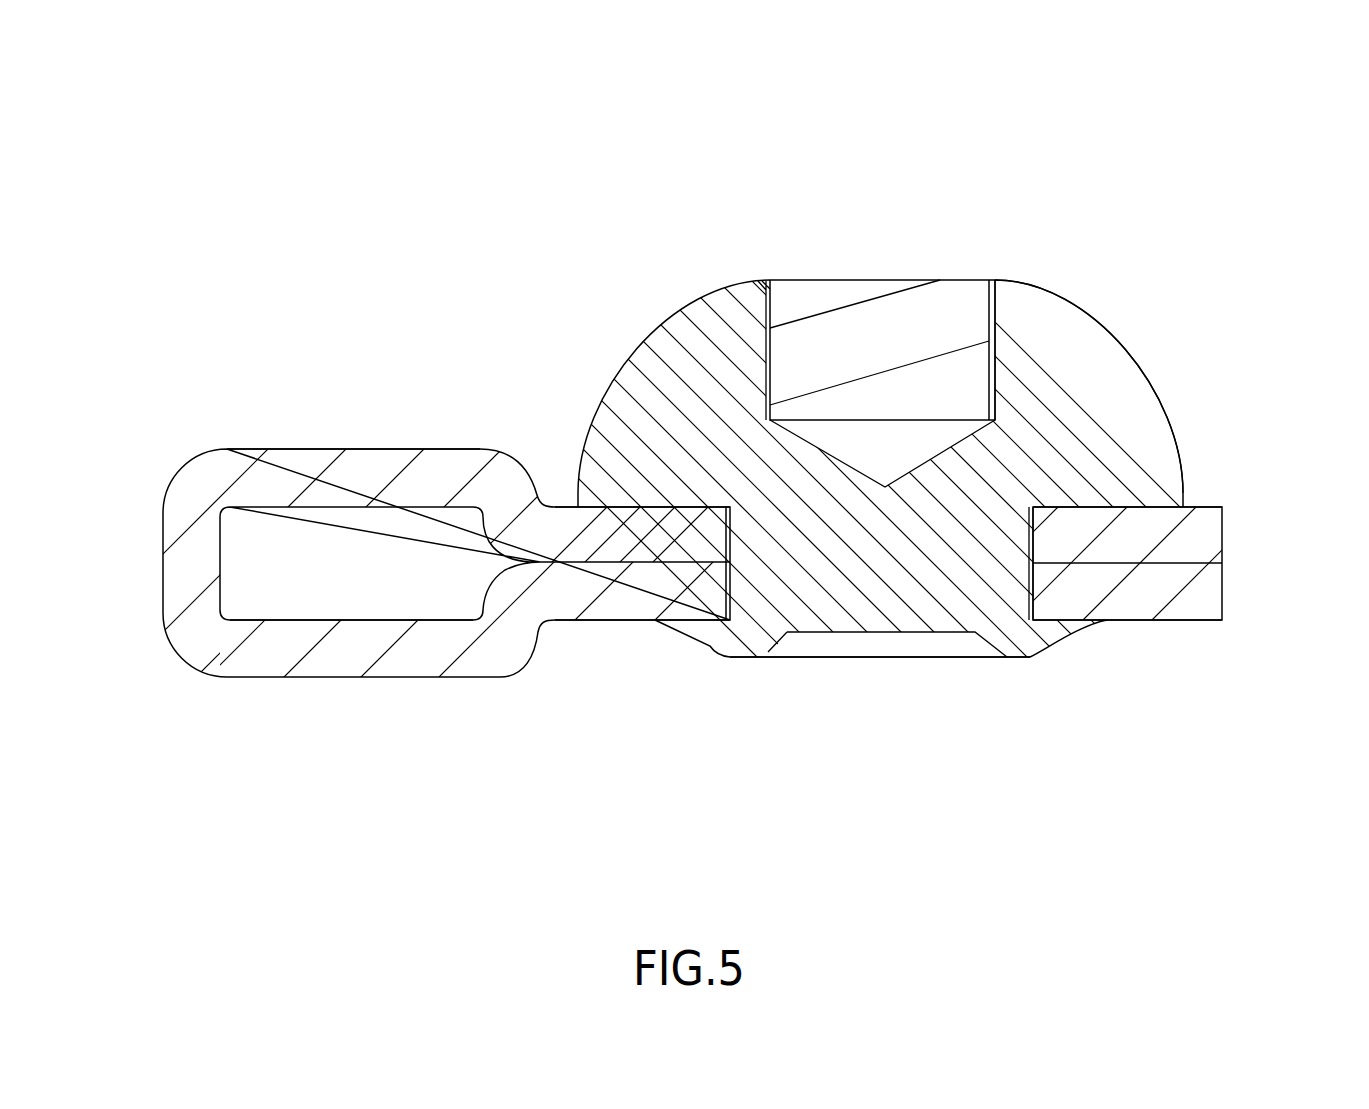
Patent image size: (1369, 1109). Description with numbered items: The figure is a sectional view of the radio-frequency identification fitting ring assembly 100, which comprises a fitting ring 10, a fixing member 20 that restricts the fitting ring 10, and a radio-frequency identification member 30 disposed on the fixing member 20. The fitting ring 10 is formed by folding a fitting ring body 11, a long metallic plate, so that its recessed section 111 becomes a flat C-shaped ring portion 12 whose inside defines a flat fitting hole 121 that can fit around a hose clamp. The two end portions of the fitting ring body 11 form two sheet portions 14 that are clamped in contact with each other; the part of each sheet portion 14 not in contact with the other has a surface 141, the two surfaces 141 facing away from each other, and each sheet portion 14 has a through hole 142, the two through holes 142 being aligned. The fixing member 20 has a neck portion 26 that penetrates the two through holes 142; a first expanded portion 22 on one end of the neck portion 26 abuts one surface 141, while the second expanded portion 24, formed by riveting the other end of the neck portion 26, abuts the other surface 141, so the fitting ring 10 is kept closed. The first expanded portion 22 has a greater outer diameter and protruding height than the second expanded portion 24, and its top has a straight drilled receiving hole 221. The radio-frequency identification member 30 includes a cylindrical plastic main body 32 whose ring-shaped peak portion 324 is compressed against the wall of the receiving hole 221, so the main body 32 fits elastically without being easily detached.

The radio-frequency identification fitting ring assembly 100 is at (240, 165).
The fitting ring 10 is at (412, 368).
The fitting ring body 11 is at (300, 445).
The ring portion 12 is at (163, 578).
The recessed section 111 is at (267, 620).
The fitting hole 121 is at (373, 590).
The fixing member 20 is at (630, 347).
The first expanded portion 22 is at (1120, 362).
The receiving hole 221 is at (975, 303).
The second expanded portion 24 is at (718, 635).
The neck portion 26 is at (905, 583).
The radio-frequency identification member 30 is at (818, 243).
The main body 32 is at (903, 272).
The peak portion 324 is at (768, 342).
The sheet portion 14 is at (1200, 590).
The surface 141 is at (1205, 507).
The through hole 142 is at (1032, 530).